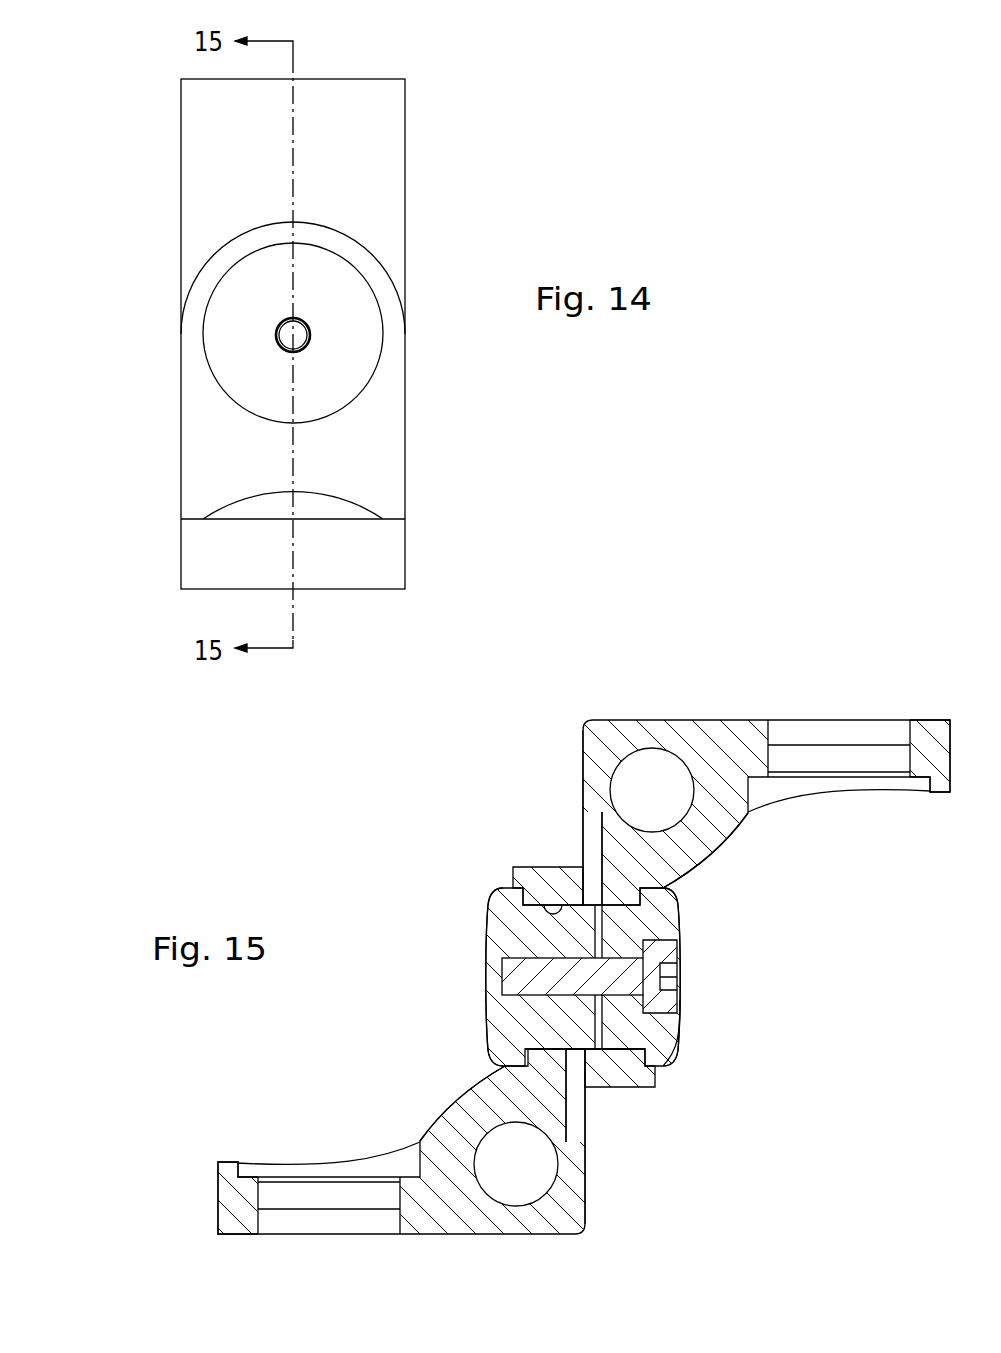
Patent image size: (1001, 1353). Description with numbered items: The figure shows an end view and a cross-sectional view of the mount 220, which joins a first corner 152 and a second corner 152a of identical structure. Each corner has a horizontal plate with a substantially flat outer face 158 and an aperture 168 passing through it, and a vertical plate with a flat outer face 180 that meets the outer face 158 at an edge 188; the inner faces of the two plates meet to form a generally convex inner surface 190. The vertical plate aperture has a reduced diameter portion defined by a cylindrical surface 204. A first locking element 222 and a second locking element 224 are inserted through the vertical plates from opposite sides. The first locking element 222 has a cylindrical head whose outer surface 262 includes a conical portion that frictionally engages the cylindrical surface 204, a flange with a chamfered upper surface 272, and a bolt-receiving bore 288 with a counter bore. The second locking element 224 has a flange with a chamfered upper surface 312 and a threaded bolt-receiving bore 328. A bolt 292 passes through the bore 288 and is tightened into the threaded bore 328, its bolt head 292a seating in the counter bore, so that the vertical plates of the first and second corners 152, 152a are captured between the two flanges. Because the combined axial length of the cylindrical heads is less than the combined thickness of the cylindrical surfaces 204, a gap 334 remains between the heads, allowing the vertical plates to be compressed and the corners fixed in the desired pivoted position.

In FIG. 14, the first corner 152 is at (181, 190).
In FIG. 15, the first corner 152 is at (673, 718).
In FIG. 14, the second corner 152a is at (407, 470).
In FIG. 15, the second corner 152a is at (448, 1240).
In FIG. 14, the mount 220 is at (407, 143).
In FIG. 15, the mount 220 is at (773, 1057).
In FIG. 14, the second locking element 224 is at (205, 359).
In FIG. 15, the second locking element 224 is at (492, 912).
In FIG. 14, the chamfered upper surface 272 is at (272, 314).
In FIG. 15, the chamfered upper surface 272 is at (681, 1033).
In FIG. 14, the bolt-receiving bore 288 is at (307, 347).
In FIG. 15, the edge 188 is at (590, 721).
In FIG. 15, the outer face 180 is at (583, 748).
In FIG. 15, the convex inner surface 190 is at (733, 837).
In FIG. 15, the aperture 168 is at (835, 722).
In FIG. 15, the outer face 158 is at (923, 720).
In FIG. 15, the gap 334 is at (597, 900).
In FIG. 15, the cylindrical surface 204 is at (543, 890).
In FIG. 15, the first locking element 222 is at (681, 918).
In FIG. 15, the chamfered upper surface 312 is at (492, 935).
In FIG. 15, the bolt head 292a is at (690, 995).
In FIG. 15, the bolt 292 is at (612, 1013).
In FIG. 15, the threaded bolt-receiving bore 328 is at (494, 990).
In FIG. 15, the outer surface 262 is at (552, 1052).